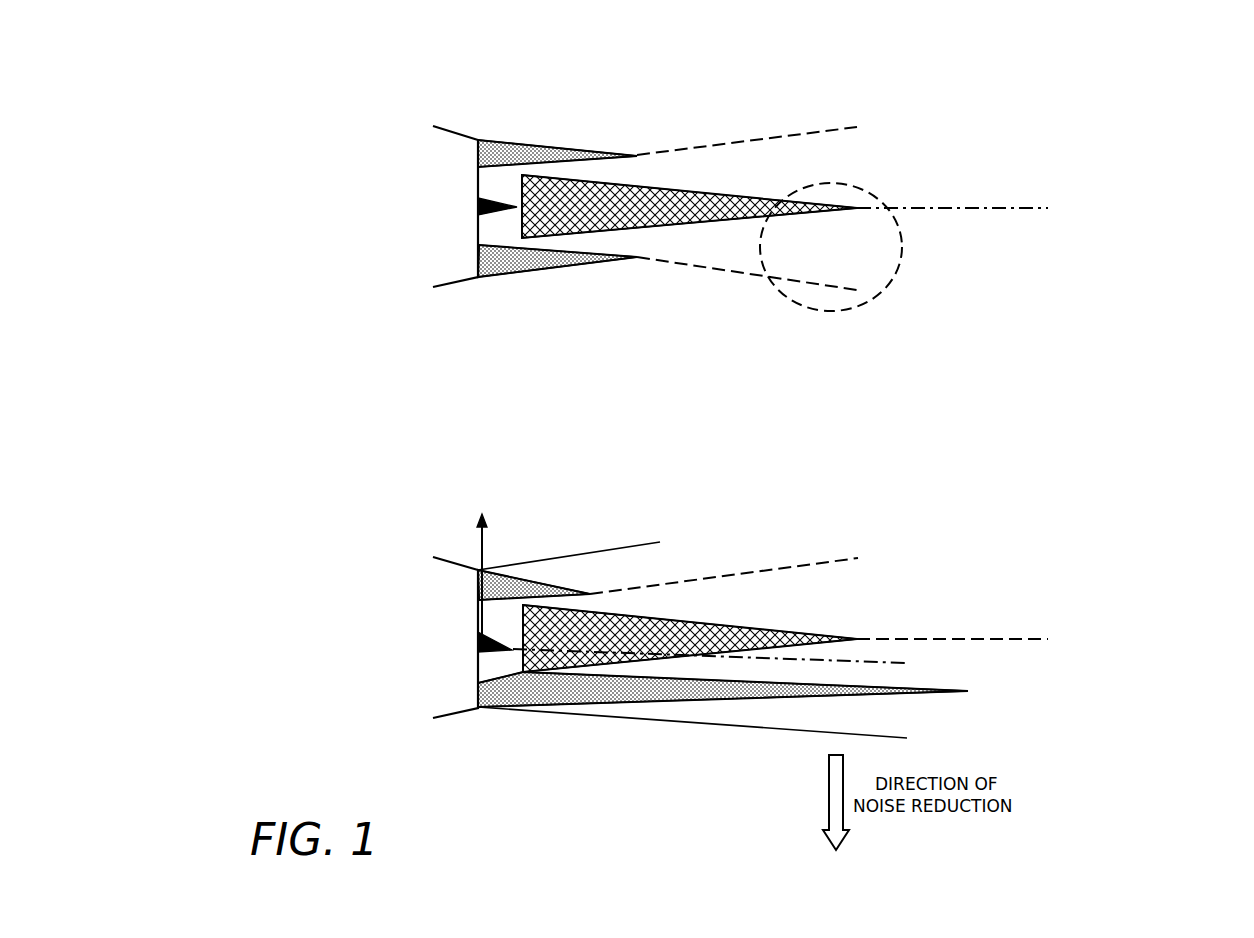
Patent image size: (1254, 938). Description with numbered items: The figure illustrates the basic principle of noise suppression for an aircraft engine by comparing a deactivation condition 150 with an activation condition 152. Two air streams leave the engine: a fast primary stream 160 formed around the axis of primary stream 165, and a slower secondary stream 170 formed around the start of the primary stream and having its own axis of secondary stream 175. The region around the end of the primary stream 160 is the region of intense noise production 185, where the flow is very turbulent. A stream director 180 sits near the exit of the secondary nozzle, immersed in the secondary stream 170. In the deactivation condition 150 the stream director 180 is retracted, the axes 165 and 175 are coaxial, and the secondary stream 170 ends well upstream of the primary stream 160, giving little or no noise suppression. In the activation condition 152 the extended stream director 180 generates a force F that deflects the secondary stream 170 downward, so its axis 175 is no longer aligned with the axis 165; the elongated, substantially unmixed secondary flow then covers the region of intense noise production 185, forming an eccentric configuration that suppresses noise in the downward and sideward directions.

The deactivation condition 150 is at (382, 206).
The activation condition 152 is at (602, 614).
The primary stream 160 is at (783, 630).
The axis of primary stream 165 is at (978, 637).
The secondary stream 170 is at (545, 590).
The axis of secondary stream 175 is at (977, 213).
The stream director 180 is at (492, 212).
The region of intense noise production 185 is at (863, 300).